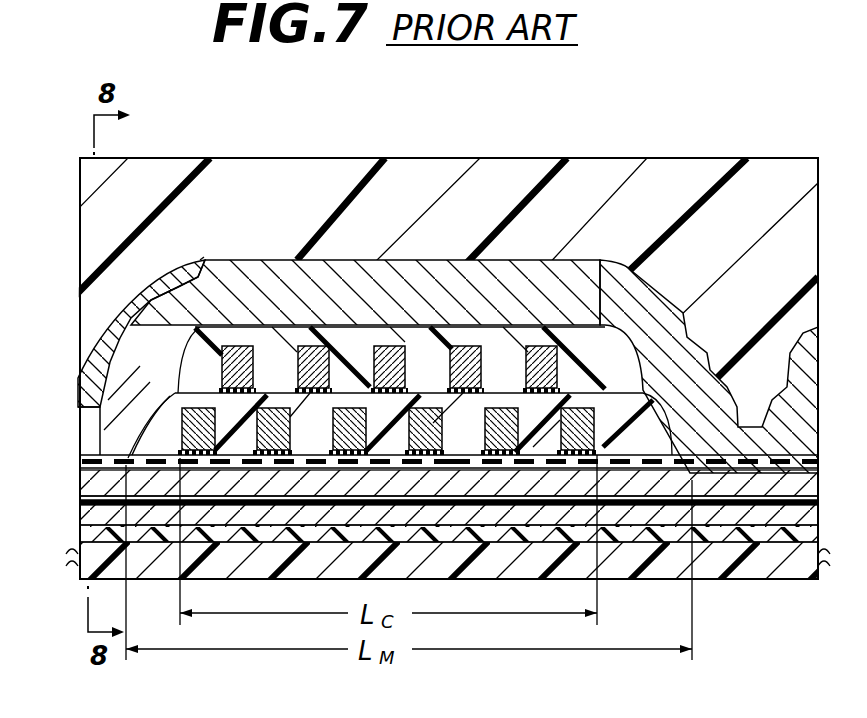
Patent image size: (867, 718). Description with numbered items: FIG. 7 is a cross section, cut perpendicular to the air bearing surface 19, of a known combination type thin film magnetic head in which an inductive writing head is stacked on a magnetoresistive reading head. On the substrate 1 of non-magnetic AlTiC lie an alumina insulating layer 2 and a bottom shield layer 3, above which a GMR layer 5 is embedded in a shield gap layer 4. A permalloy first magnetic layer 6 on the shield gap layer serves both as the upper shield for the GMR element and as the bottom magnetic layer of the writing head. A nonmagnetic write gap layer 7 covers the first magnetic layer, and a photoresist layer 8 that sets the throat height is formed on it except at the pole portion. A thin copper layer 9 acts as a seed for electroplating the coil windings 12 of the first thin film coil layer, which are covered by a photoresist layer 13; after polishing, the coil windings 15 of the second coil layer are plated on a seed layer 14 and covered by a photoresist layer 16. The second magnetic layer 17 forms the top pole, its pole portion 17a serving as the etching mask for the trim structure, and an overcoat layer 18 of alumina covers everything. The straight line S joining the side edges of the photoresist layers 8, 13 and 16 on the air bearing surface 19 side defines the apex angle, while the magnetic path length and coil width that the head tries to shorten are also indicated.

The substrate 1 is at (668, 560).
The insulating layer 2 is at (790, 533).
The bottom shield layer 3 is at (762, 517).
The shield gap layer 4 is at (745, 522).
The GMR layer 5 is at (100, 497).
The first magnetic layer 6 is at (730, 507).
The write gap layer 7 is at (100, 467).
The photoresist layer 8 is at (638, 467).
The copper layer 9 is at (500, 457).
The coil windings 12 is at (197, 412).
The photoresist layer 13 is at (272, 405).
The seed layer 14 is at (365, 345).
The coil windings 15 is at (437, 348).
The photoresist layer 16 is at (490, 330).
The second magnetic layer 17 is at (613, 270).
The pole portion 17a is at (88, 418).
The overcoat layer 18 is at (568, 195).
The air bearing surface 19 is at (74, 509).
The straight line S is at (201, 260).